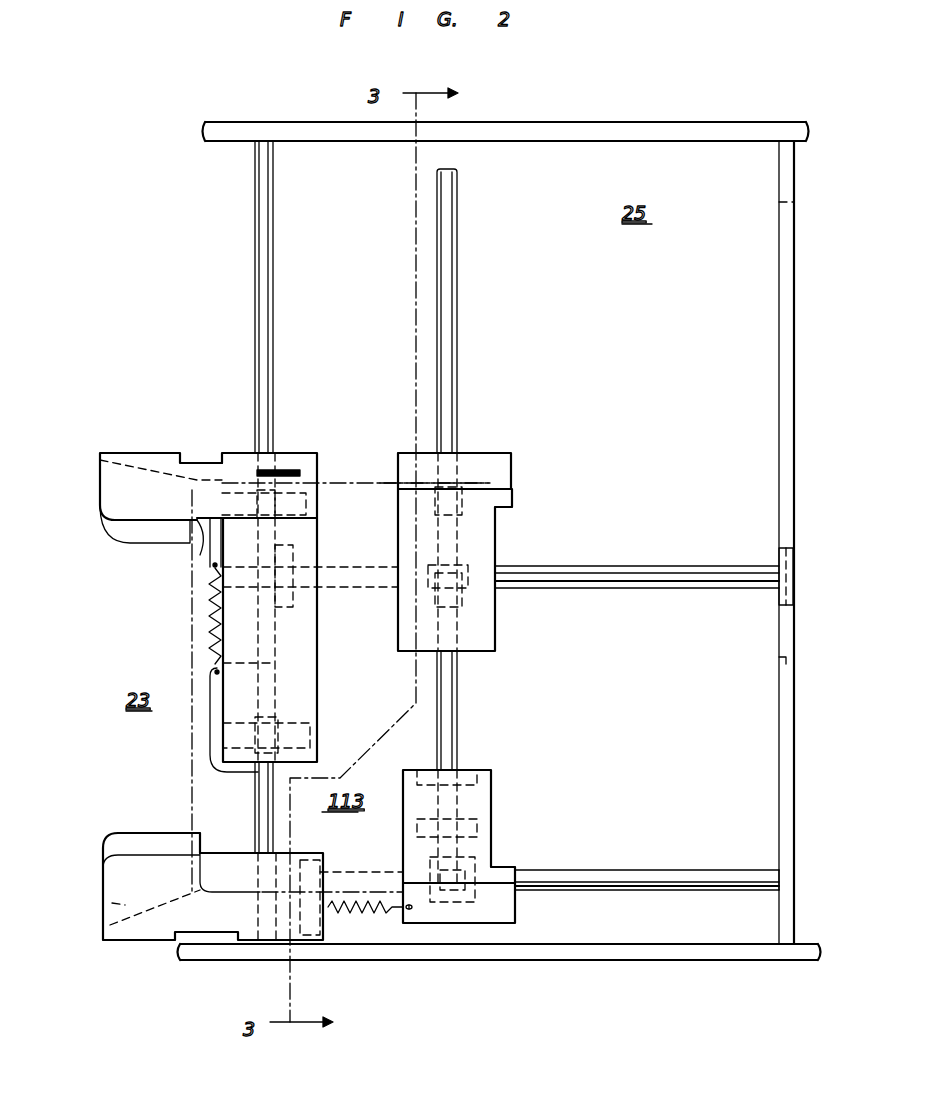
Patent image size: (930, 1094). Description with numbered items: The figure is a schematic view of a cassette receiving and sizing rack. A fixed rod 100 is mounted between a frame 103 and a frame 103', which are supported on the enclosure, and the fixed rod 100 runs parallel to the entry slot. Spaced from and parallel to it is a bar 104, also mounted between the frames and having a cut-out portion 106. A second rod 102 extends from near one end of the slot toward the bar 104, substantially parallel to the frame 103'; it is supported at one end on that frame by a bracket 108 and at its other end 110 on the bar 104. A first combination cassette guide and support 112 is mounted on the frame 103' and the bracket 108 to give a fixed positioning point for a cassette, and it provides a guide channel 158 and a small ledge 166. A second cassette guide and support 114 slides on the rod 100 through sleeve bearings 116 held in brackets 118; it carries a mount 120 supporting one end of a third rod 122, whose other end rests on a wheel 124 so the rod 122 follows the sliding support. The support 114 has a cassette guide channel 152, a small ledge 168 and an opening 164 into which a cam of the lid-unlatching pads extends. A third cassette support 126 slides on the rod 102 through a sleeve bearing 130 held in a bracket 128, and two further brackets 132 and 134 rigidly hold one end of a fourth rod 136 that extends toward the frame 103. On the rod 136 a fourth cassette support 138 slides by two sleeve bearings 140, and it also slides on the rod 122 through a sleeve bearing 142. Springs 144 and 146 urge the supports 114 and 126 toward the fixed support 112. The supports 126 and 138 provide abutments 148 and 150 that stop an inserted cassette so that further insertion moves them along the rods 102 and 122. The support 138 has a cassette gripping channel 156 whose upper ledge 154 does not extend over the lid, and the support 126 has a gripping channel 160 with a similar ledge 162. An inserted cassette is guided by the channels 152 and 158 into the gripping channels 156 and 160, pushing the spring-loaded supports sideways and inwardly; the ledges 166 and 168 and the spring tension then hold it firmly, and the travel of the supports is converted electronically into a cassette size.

The fixed rod 100 is at (271, 332).
The second rod 102 is at (650, 870).
The frame 103 is at (506, 114).
The frame 103' is at (499, 972).
The bar 104 is at (779, 190).
The cut-out portion 106 is at (779, 662).
The bracket 108 is at (312, 961).
The other end 110 is at (794, 877).
The first combination cassette guide and support 112 is at (146, 940).
The second cassette guide and support 114 is at (320, 461).
The sleeve bearings 116 is at (238, 470).
The brackets 118 is at (307, 497).
The mount 120 is at (300, 572).
The third rod 122 is at (638, 572).
The wheel 124 is at (779, 555).
The third cassette support 126 is at (490, 786).
The bracket 128 is at (465, 858).
The sleeve bearing 130 is at (496, 923).
The bracket 132 is at (428, 770).
The bracket 134 is at (417, 830).
The fourth rod 136 is at (455, 318).
The fourth cassette support 138 is at (490, 456).
The sleeve bearings 140 is at (462, 510).
The sleeve bearing 142 is at (468, 570).
The spring means 144 is at (211, 605).
The spring means 146 is at (334, 910).
The abutment 148 is at (515, 890).
The abutment 150 is at (515, 498).
The cassette guide channel 152 is at (147, 463).
The upper ledge 154 is at (413, 493).
The cassette gripping channel 156 is at (413, 472).
The guide channel 158 is at (118, 905).
The gripping channel 160 is at (420, 885).
The ledge 162 is at (415, 878).
The opening 164 is at (292, 470).
The small ledge 166 is at (200, 855).
The small ledge 168 is at (196, 540).